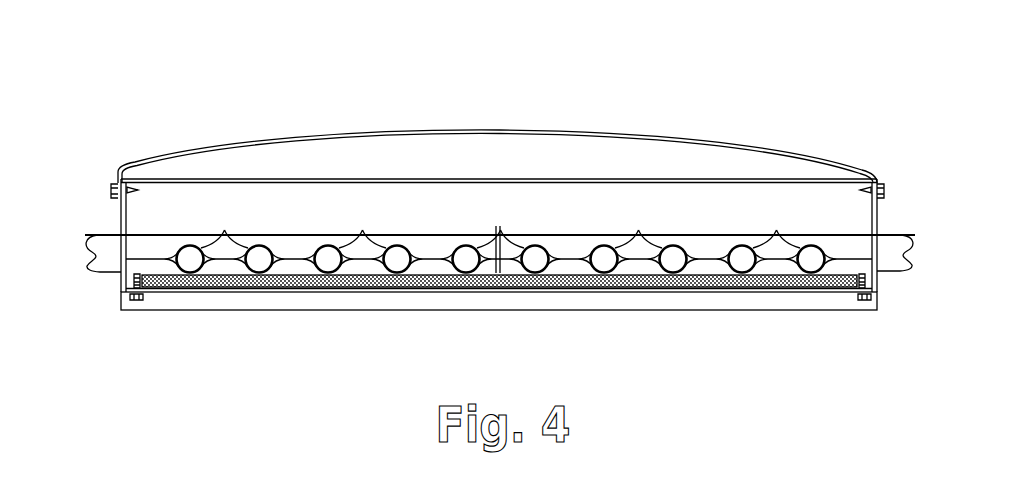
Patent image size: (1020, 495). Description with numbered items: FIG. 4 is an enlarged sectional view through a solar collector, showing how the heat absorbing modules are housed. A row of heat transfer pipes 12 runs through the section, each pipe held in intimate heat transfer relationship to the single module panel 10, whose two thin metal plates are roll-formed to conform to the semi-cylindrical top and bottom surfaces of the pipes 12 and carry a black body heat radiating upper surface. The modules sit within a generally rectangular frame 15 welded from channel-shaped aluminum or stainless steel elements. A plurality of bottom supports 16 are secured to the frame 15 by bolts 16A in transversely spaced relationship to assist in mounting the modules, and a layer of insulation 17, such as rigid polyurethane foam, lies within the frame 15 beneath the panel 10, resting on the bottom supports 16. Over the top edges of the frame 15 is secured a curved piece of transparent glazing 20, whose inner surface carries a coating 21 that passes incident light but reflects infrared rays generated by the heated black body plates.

The single module panel 10 is at (225, 262).
The heat transfer pipe 12 is at (500, 225).
The rectangular frame 15 is at (877, 210).
The bottom support 16 is at (700, 313).
The bolt 16A is at (138, 305).
The layer of insulation 17 is at (562, 290).
The glazing 20 is at (638, 133).
The coating 21 is at (222, 152).